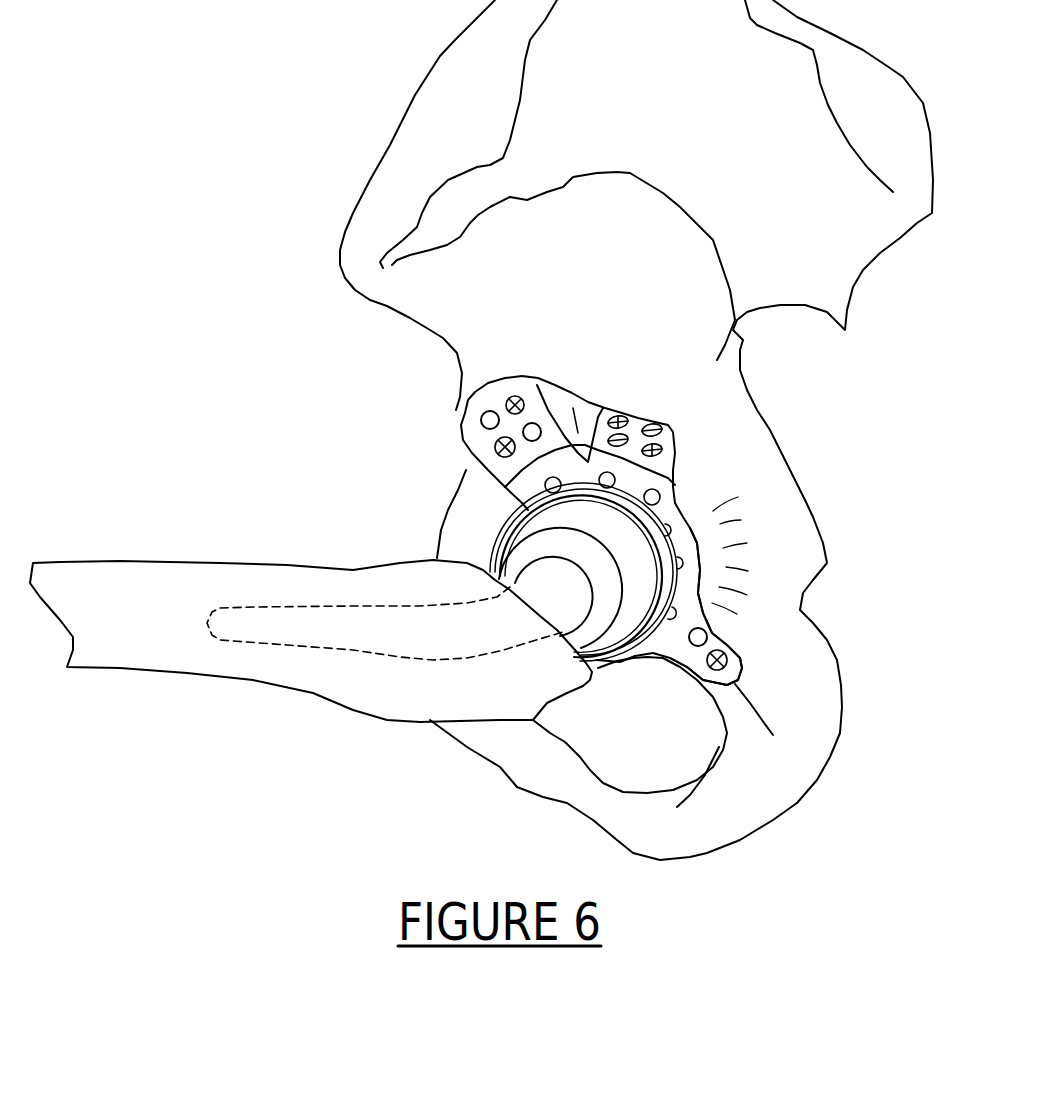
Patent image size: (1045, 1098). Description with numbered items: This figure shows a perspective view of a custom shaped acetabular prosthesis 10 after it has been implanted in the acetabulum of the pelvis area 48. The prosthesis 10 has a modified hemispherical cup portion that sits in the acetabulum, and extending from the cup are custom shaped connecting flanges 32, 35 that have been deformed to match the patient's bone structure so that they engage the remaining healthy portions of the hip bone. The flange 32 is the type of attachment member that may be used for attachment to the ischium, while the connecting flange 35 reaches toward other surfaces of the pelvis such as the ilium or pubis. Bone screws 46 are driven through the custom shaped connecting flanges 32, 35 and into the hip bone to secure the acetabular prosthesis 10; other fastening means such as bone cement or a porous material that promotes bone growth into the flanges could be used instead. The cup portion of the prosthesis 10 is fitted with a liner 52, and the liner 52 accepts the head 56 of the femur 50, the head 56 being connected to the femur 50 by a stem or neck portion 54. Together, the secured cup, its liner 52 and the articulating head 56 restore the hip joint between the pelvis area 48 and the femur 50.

The acetabular prosthesis 10 is at (712, 478).
The flange 32 is at (745, 654).
The custom shaped connecting flange 35 is at (654, 390).
The bone screw 46 is at (505, 401).
The pelvis area 48 is at (904, 289).
The femur 50 is at (313, 692).
The liner 52 is at (530, 548).
The stem or neck portion 54 is at (548, 590).
The head of the femur 56 is at (648, 555).